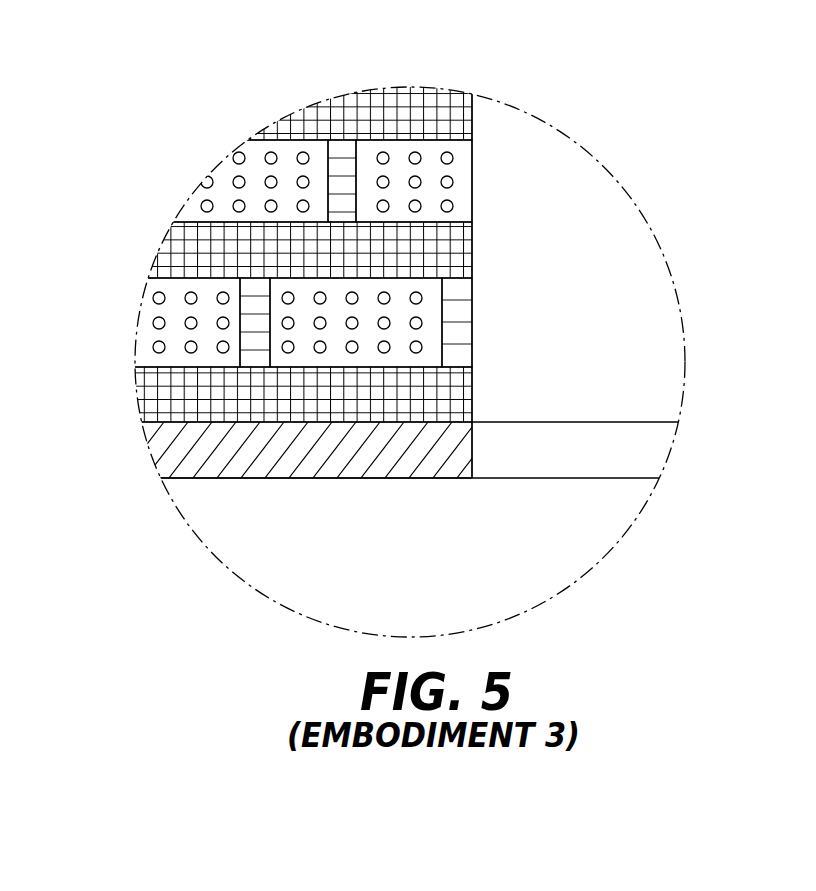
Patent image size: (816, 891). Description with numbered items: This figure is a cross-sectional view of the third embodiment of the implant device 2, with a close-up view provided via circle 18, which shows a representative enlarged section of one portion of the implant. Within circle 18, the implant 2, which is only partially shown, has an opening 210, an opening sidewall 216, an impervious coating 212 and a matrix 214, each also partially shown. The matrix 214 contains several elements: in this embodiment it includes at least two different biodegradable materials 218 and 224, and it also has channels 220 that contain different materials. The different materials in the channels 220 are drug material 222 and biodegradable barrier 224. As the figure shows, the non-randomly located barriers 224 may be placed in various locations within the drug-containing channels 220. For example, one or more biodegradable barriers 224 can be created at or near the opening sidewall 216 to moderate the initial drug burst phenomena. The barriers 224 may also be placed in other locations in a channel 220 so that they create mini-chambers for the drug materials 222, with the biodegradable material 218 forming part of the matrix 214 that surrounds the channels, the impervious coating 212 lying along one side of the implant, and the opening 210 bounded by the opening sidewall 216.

The circle 18 is at (608, 149).
The implant device 2 is at (354, 481).
The opening 210 is at (584, 463).
The impervious coating 212 is at (163, 481).
The matrix 214 is at (419, 288).
The opening sidewall 216 is at (476, 139).
The biodegradable material 218 is at (136, 415).
The channels 220 is at (231, 170).
The drug material 222 is at (150, 329).
The biodegradable barrier 224 is at (332, 154).